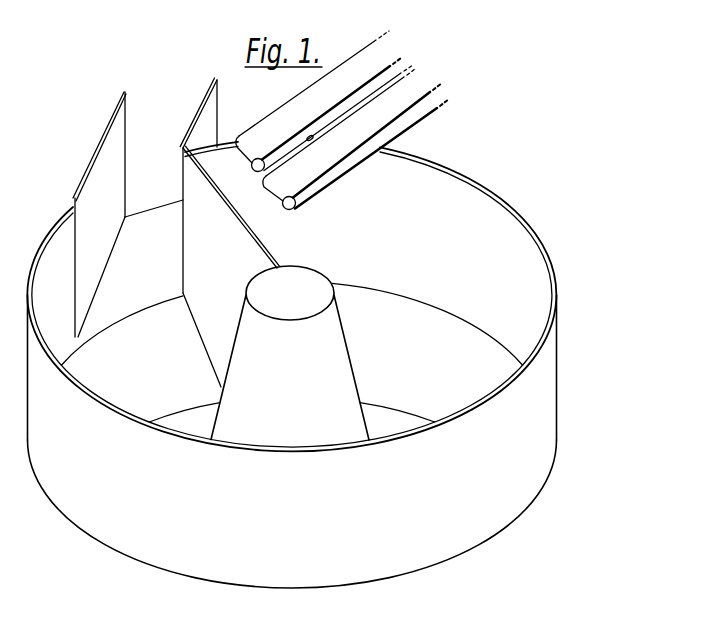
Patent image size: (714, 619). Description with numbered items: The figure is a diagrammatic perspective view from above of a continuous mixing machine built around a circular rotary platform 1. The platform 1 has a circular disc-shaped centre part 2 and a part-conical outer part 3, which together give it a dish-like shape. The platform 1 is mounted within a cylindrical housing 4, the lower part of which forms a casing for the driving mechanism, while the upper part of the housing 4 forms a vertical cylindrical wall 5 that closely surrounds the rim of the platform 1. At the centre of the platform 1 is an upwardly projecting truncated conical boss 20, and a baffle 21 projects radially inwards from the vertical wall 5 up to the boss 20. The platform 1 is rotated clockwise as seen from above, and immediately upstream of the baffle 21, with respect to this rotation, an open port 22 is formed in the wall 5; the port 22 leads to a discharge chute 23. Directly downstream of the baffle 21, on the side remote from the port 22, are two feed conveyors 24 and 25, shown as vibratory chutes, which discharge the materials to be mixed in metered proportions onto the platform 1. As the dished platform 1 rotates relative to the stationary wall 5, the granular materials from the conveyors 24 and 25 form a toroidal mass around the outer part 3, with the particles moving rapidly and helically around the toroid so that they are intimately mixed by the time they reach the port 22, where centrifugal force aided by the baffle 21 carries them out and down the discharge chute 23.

The rotary platform 1 is at (311, 309).
The centre part 2 is at (396, 436).
The outer part 3 is at (404, 374).
The cylindrical housing 4 is at (534, 442).
The vertical cylindrical wall 5 is at (555, 283).
The truncated conical boss 20 is at (247, 371).
The baffle 21 is at (206, 336).
The open port 22 is at (80, 248).
The discharge chute 23 is at (154, 207).
The feed conveyor 24 is at (286, 115).
The feed conveyor 25 is at (288, 169).